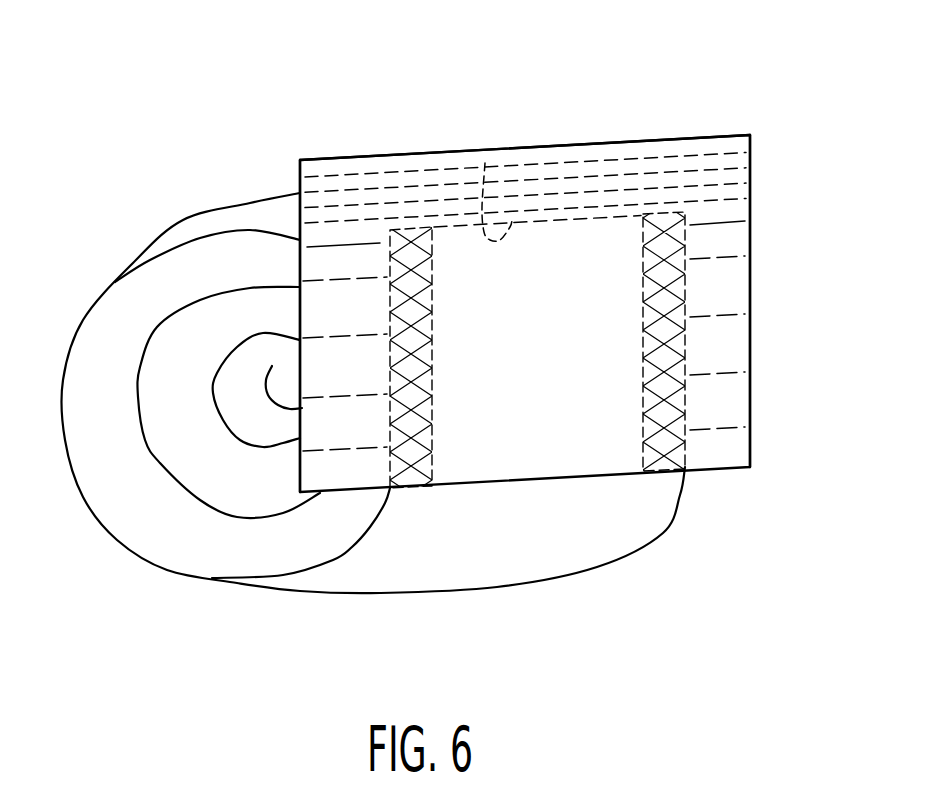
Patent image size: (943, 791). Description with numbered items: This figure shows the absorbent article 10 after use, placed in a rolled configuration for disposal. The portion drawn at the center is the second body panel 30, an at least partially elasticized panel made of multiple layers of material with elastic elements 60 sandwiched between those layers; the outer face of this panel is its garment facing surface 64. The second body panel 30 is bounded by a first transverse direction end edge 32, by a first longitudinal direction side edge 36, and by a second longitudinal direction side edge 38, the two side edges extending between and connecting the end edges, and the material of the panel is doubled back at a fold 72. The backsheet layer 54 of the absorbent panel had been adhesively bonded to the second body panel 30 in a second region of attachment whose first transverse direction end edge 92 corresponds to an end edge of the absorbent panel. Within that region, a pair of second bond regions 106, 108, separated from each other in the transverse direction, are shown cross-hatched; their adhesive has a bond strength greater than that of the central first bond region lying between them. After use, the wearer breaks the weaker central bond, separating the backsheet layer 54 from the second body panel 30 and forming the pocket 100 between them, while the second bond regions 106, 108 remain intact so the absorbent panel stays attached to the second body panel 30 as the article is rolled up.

The absorbent article 10 is at (100, 97).
The second body panel 30 is at (342, 475).
The first transverse direction end edge 32 is at (737, 222).
The first longitudinal direction side edge 36 is at (300, 268).
The second longitudinal direction side edge 38 is at (750, 242).
The backsheet layer 54 is at (487, 565).
The elastic elements 60 is at (605, 175).
The garment facing surface 64 is at (733, 356).
The fold 72 is at (525, 143).
The first transverse direction end edge of the second region of attachment 92 is at (485, 163).
The pocket 100 is at (538, 458).
The second bond region 106 is at (414, 244).
The second bond region 108 is at (663, 238).